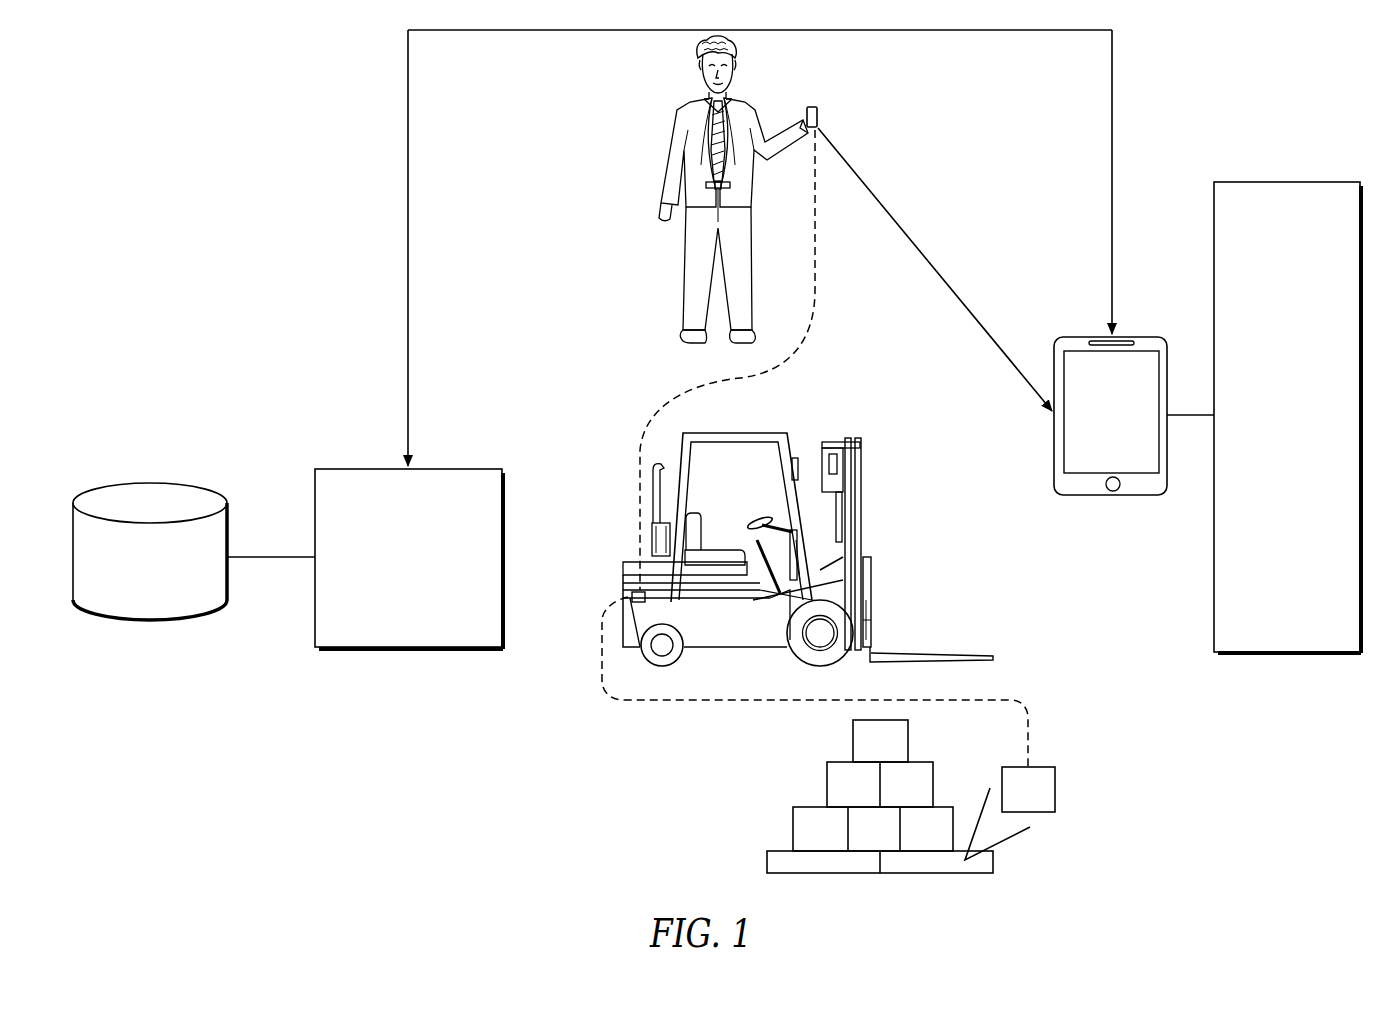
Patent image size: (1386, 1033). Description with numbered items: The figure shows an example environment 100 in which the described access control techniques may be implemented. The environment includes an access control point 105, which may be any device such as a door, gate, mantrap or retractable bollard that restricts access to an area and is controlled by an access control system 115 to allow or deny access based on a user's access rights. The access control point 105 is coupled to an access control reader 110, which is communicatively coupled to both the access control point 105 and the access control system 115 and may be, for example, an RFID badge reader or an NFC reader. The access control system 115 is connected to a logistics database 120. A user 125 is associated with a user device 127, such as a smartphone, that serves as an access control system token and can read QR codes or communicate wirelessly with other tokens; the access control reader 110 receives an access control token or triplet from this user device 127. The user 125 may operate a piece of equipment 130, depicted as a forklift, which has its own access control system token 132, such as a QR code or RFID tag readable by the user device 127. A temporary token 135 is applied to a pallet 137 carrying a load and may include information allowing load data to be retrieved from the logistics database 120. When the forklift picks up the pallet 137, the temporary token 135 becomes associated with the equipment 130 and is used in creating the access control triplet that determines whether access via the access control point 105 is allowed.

The environment 100 is at (115, 160).
The access control point 105 is at (1307, 429).
The access control reader 110 is at (1078, 337).
The access control system 115 is at (366, 468).
The logistics database 120 is at (148, 483).
The user 125 is at (664, 173).
The user device 127 is at (813, 107).
The equipment 130 is at (735, 433).
The access control system token 132 is at (631, 591).
The temporary token 135 is at (1055, 788).
The pallet 137 is at (789, 786).